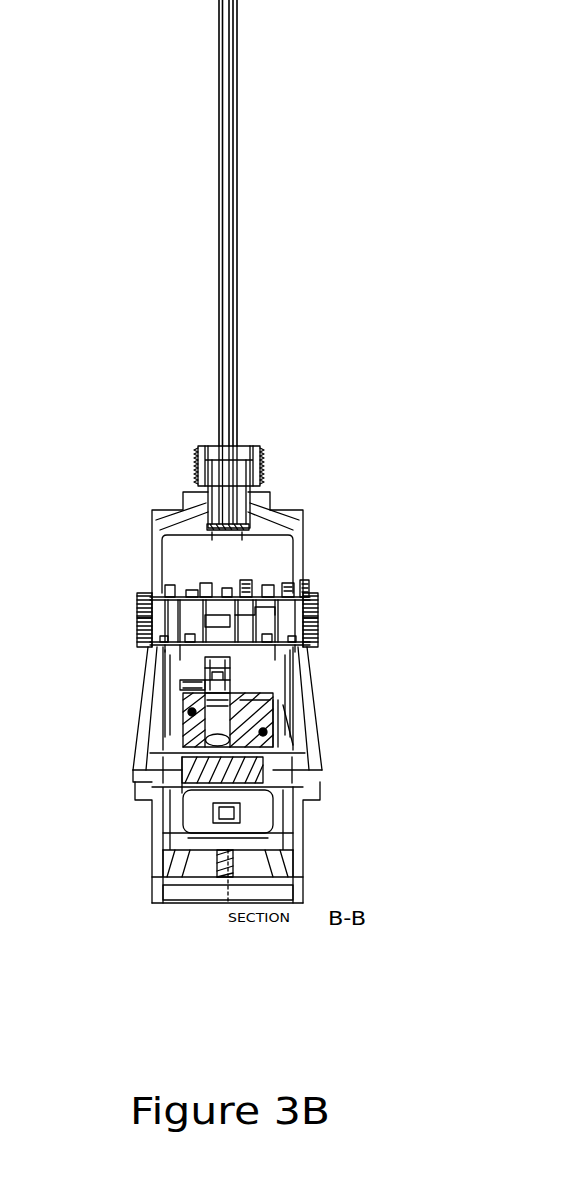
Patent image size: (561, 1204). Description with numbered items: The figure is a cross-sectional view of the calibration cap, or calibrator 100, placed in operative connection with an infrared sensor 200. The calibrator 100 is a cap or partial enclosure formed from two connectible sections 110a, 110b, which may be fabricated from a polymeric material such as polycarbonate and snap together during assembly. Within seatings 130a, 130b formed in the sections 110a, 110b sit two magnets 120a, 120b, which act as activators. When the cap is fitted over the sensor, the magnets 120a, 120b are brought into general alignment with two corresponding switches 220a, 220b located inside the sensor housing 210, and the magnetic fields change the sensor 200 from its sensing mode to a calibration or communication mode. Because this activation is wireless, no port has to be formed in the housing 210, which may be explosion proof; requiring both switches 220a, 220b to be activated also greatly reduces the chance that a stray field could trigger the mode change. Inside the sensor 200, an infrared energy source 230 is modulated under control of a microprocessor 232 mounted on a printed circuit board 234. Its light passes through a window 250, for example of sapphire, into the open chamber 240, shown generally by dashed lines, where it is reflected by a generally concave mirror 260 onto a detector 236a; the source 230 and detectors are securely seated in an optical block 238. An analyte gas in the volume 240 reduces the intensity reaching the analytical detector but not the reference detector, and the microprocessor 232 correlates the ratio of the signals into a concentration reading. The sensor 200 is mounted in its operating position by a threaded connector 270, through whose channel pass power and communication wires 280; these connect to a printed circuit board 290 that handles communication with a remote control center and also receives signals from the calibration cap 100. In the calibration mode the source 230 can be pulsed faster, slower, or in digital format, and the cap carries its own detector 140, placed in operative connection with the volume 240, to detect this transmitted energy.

The calibrator 100 is at (343, 747).
The connectible section 110a is at (125, 770).
The connectible section 110b is at (322, 725).
The magnet 120a is at (143, 628).
The magnet 120b is at (318, 618).
The seating 130a is at (150, 590).
The seating 130b is at (318, 598).
The detector 140 is at (240, 818).
The sensor 200 is at (100, 522).
The housing 210 is at (152, 510).
The switch 220a is at (143, 607).
The switch 220b is at (318, 596).
The infrared energy source 230 is at (232, 660).
The microprocessor 232 is at (160, 648).
The printed circuit board 234 is at (300, 640).
The detector 236a is at (235, 692).
The optical block 238 is at (300, 747).
The chamber 240 is at (148, 800).
The window 250 is at (135, 776).
The mirror 260 is at (237, 850).
The threaded connector 270 is at (262, 455).
The power and communication wires 280 is at (218, 376).
The printed circuit board 290 is at (300, 557).